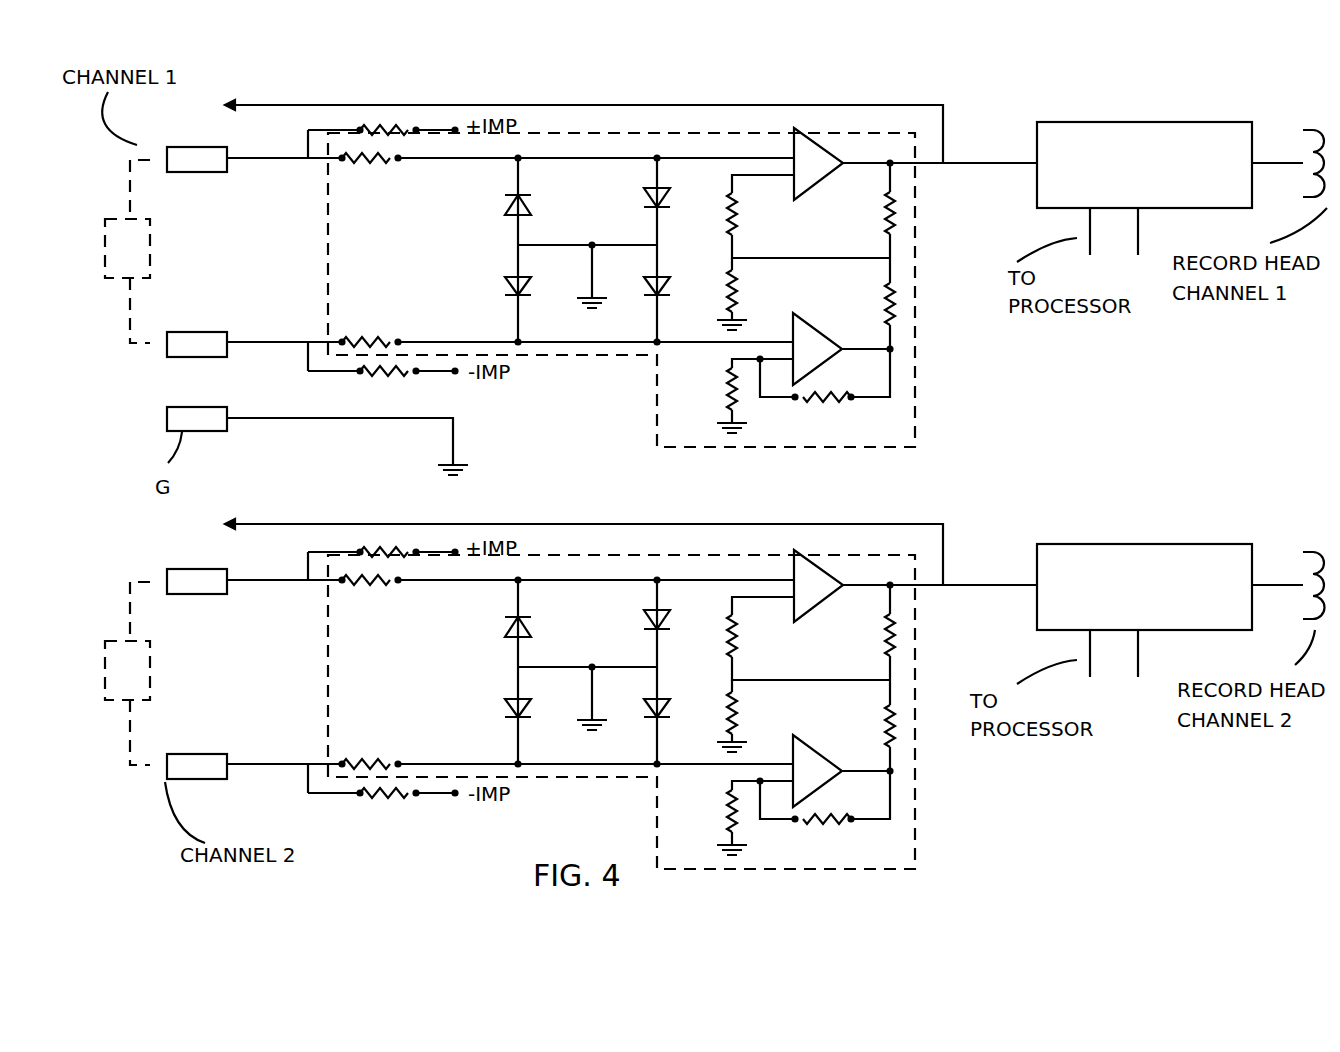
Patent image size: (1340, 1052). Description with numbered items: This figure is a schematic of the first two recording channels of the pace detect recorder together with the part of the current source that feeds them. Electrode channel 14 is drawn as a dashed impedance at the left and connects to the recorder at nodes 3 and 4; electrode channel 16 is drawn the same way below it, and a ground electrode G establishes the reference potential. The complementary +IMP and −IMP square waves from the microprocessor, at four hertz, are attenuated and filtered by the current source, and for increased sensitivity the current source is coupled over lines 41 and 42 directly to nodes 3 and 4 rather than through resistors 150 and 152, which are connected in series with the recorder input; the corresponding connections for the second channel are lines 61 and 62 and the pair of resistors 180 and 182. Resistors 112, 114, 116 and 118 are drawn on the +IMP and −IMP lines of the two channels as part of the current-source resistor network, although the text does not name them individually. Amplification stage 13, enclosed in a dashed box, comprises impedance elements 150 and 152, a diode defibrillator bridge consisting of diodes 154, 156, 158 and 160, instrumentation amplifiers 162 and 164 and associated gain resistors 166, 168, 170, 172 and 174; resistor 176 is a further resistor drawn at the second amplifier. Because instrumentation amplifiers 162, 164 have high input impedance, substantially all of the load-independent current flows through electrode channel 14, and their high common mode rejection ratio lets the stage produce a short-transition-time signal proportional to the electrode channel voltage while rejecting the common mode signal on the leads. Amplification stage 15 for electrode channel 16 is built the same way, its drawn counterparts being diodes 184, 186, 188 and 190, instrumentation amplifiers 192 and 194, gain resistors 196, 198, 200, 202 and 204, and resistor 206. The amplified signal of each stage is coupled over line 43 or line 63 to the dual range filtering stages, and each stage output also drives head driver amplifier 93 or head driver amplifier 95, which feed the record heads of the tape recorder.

The node 3 is at (305, 157).
The node 4 is at (308, 343).
The amplification stage 13 is at (593, 133).
The electrode channel 14 is at (98, 278).
The amplification stage 15 is at (593, 555).
The electrode channel 16 is at (98, 700).
The line 41 is at (308, 157).
The line 42 is at (307, 362).
The line 43 is at (437, 104).
The line 61 is at (308, 577).
The line 62 is at (308, 782).
The line 63 is at (380, 523).
The head driver amplifier 93 is at (1097, 122).
The head driver amplifier 95 is at (1097, 544).
The channel 1 +IMP impedance resistor 112 is at (400, 134).
The channel 1 -IMP impedance resistor 114 is at (390, 375).
The channel 2 +IMP impedance resistor 116 is at (378, 551).
The channel 2 -IMP impedance resistor 118 is at (390, 798).
The resistor 150 is at (366, 165).
The resistor 152 is at (367, 340).
The diode 154 is at (503, 197).
The diode 156 is at (643, 200).
The diode 158 is at (500, 290).
The diode 160 is at (647, 290).
The instrumentation amplifier 162 is at (822, 183).
The instrumentation amplifier 164 is at (827, 338).
The gain resistor 166 is at (737, 228).
The gain resistor 168 is at (900, 212).
The gain resistor 170 is at (897, 300).
The gain resistor 172 is at (737, 295).
The gain resistor 174 is at (840, 403).
The resistor 176 is at (728, 393).
The resistor 180 is at (360, 587).
The resistor 182 is at (368, 763).
The clamp diode 184 is at (503, 625).
The clamp diode 186 is at (645, 616).
The clamp diode 188 is at (502, 712).
The clamp diode 190 is at (645, 712).
The channel 2 first operational amplifier 192 is at (808, 602).
The channel 2 second operational amplifier 194 is at (842, 748).
The resistor 196 is at (735, 635).
The resistor 198 is at (897, 645).
The resistor 200 is at (898, 723).
The resistor 202 is at (735, 703).
The feedback resistor 204 is at (840, 825).
The resistor 206 is at (728, 817).